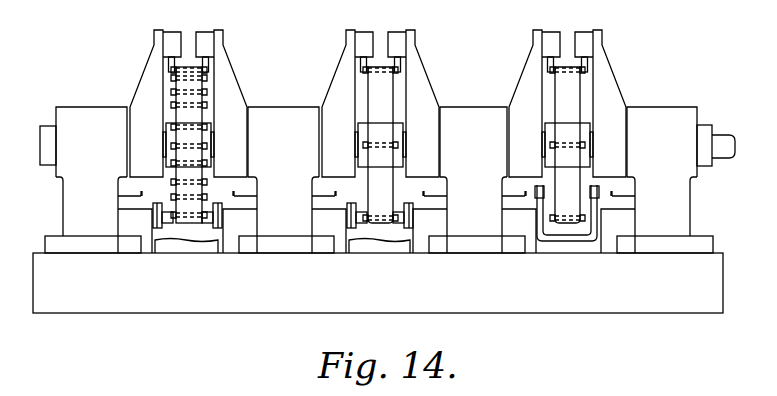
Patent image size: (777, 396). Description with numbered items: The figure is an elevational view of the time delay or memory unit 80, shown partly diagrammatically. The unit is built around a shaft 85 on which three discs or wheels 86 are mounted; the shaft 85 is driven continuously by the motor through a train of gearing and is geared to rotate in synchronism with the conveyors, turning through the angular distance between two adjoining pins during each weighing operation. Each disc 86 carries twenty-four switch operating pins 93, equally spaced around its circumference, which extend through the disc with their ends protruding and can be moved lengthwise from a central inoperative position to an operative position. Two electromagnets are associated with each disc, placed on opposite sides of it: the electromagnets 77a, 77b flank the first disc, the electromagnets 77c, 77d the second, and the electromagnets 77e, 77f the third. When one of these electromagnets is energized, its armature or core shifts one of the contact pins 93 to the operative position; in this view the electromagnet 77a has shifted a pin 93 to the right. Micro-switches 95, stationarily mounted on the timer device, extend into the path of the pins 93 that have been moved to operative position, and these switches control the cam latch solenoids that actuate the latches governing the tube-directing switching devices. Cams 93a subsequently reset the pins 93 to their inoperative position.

The time delay unit 80 is at (479, 45).
The shaft 85 is at (722, 143).
The disc 86 is at (192, 137).
The switch operating pin 93 is at (207, 106).
The cam 93a is at (587, 190).
The micro-switch 95 is at (205, 69).
The electromagnet 77a is at (134, 218).
The electromagnet 77b is at (242, 218).
The electromagnet 77c is at (330, 217).
The electromagnet 77d is at (443, 222).
The electromagnet 77e is at (516, 213).
The electromagnet 77f is at (620, 222).